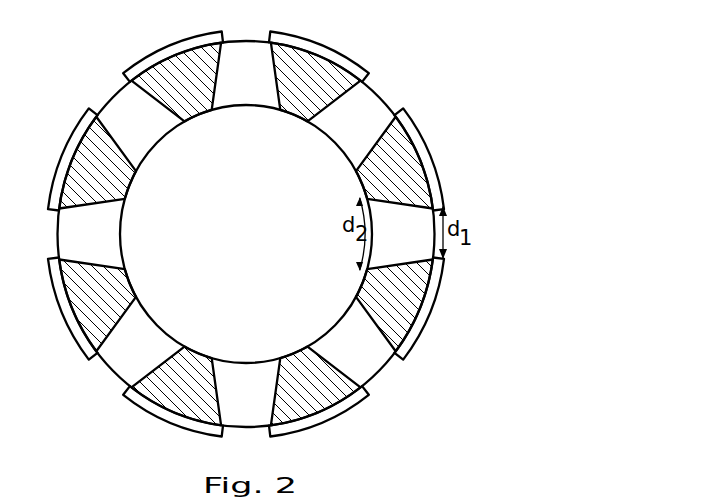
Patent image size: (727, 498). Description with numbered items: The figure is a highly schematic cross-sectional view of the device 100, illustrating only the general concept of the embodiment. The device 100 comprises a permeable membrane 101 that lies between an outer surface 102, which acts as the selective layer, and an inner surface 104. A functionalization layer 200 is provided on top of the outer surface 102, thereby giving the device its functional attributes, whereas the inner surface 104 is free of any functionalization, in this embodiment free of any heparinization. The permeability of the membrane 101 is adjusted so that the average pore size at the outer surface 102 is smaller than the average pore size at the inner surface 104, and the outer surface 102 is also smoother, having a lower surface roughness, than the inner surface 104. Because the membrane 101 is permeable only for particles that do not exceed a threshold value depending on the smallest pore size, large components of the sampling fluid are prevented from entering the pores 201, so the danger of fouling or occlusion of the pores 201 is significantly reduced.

The device 100 is at (545, 48).
The permeable membrane 101 is at (322, 88).
The outer surface 102 is at (128, 67).
The inner surface 104 is at (203, 110).
The functionalization layer 200 is at (177, 50).
The pores 201 is at (135, 140).